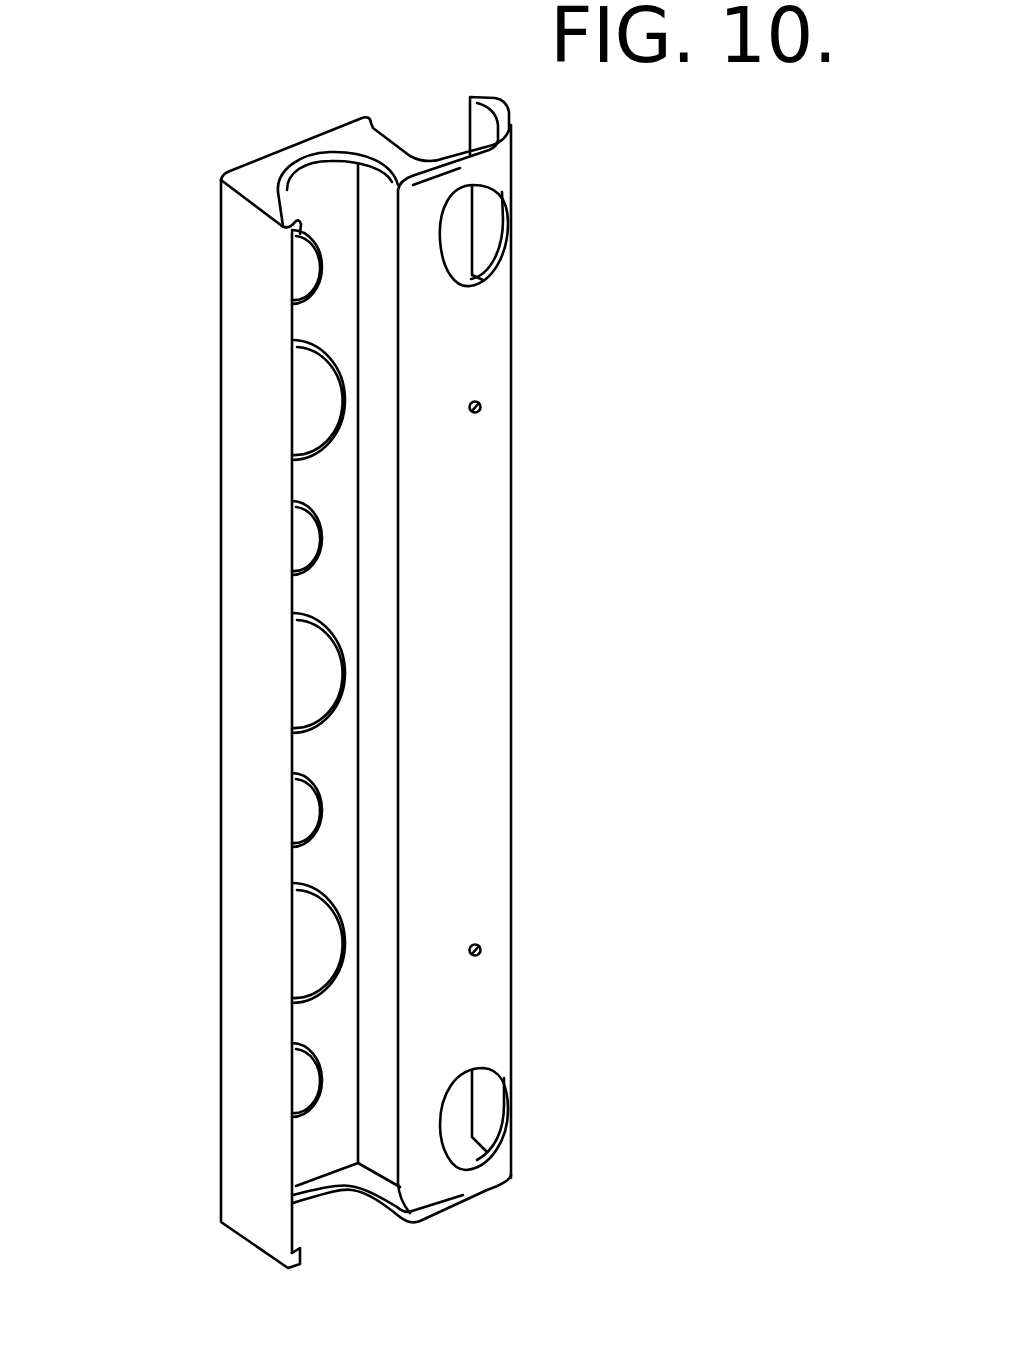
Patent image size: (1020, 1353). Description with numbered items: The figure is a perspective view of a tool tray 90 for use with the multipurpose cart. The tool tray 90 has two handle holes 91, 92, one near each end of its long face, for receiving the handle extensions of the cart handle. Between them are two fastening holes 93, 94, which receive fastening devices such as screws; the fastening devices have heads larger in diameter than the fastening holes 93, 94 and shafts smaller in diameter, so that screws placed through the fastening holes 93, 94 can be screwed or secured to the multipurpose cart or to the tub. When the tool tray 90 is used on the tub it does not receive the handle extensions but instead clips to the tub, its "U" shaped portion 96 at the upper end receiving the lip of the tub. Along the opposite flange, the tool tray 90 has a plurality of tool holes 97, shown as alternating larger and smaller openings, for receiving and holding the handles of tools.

The tool tray 90 is at (537, 624).
The handle hole 91 is at (470, 228).
The handle hole 92 is at (455, 1122).
The fastening hole 93 is at (483, 405).
The fastening hole 94 is at (482, 948).
The "U" shaped portion 96 is at (431, 124).
The tool holes 97 is at (300, 266).